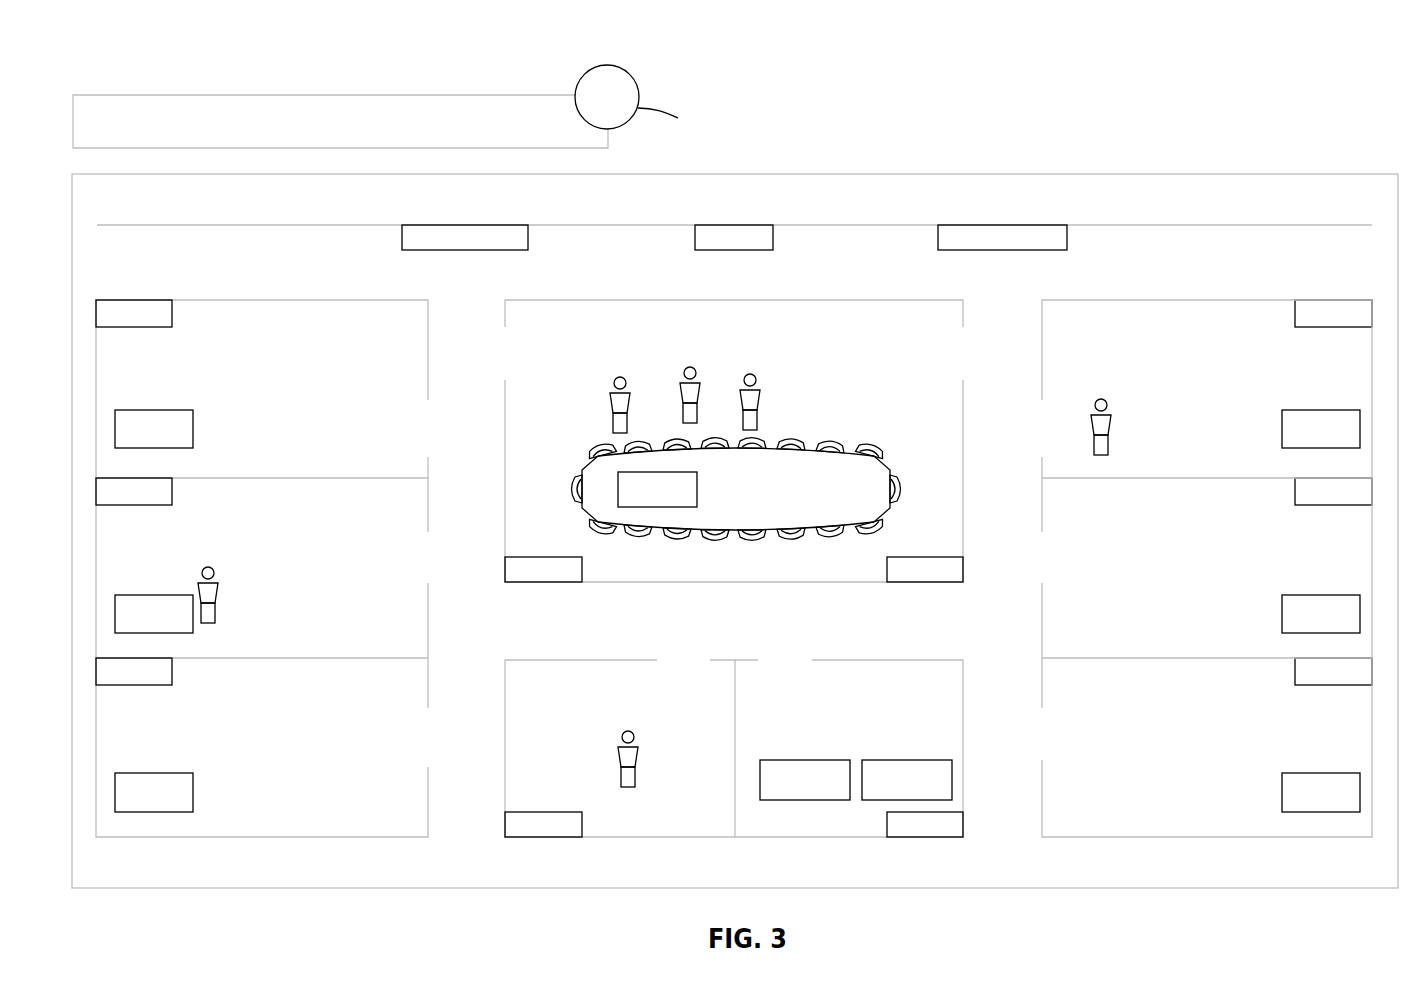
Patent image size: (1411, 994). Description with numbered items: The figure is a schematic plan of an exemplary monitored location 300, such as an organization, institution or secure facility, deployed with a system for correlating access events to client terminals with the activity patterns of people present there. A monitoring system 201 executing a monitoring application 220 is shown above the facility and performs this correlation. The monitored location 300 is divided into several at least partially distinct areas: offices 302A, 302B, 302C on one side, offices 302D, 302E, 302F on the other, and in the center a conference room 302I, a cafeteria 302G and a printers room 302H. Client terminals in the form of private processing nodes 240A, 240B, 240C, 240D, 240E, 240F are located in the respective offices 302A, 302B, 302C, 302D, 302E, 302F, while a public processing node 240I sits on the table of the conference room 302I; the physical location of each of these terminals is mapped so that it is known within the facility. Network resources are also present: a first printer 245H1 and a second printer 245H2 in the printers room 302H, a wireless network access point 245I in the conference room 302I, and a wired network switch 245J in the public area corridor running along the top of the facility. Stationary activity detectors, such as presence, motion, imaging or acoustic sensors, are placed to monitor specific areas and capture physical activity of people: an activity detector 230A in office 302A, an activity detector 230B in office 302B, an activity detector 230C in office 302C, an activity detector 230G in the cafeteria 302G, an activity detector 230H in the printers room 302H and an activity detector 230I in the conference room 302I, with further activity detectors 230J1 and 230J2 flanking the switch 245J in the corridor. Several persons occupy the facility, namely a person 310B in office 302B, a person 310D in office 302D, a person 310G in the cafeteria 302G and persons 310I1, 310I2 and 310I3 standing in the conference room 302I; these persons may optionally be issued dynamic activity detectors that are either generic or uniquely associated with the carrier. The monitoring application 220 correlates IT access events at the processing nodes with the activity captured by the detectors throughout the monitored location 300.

The monitoring system 201 is at (340, 121).
The monitoring application 220 is at (692, 108).
The monitored location 300 is at (1300, 77).
The activity detector 230J1 is at (465, 238).
The wired network switch 245J is at (734, 238).
The activity detector 230J2 is at (1002, 238).
The activity detector 230A is at (734, 492).
The activity detector 230B is at (134, 491).
The activity detector 230C is at (134, 671).
The activity detector 230G is at (543, 824).
The activity detector 230H is at (925, 824).
The activity detector 230I is at (543, 569).
The wireless network access point 245I is at (925, 569).
The printer 245H1 is at (805, 780).
The printer 245H2 is at (907, 780).
The private processing node 240A is at (154, 429).
The private processing node 240B is at (154, 614).
The private processing node 240C is at (154, 792).
The private processing node 240D is at (1321, 429).
The private processing node 240E is at (1321, 614).
The private processing node 240F is at (1321, 792).
The public processing node 240I is at (736, 488).
The office 302A is at (262, 389).
The office 302B is at (262, 568).
The office 302C is at (262, 747).
The office 302D is at (1207, 389).
The office 302E is at (1207, 568).
The office 302F is at (1207, 747).
The cafeteria 302G is at (620, 747).
The printers room 302H is at (849, 747).
The conference room 302I is at (734, 441).
The person 310B is at (220, 596).
The person 310D is at (1113, 426).
The person 310G is at (640, 760).
The person 310I1 is at (591, 398).
The person 310I2 is at (665, 383).
The person 310I3 is at (779, 396).